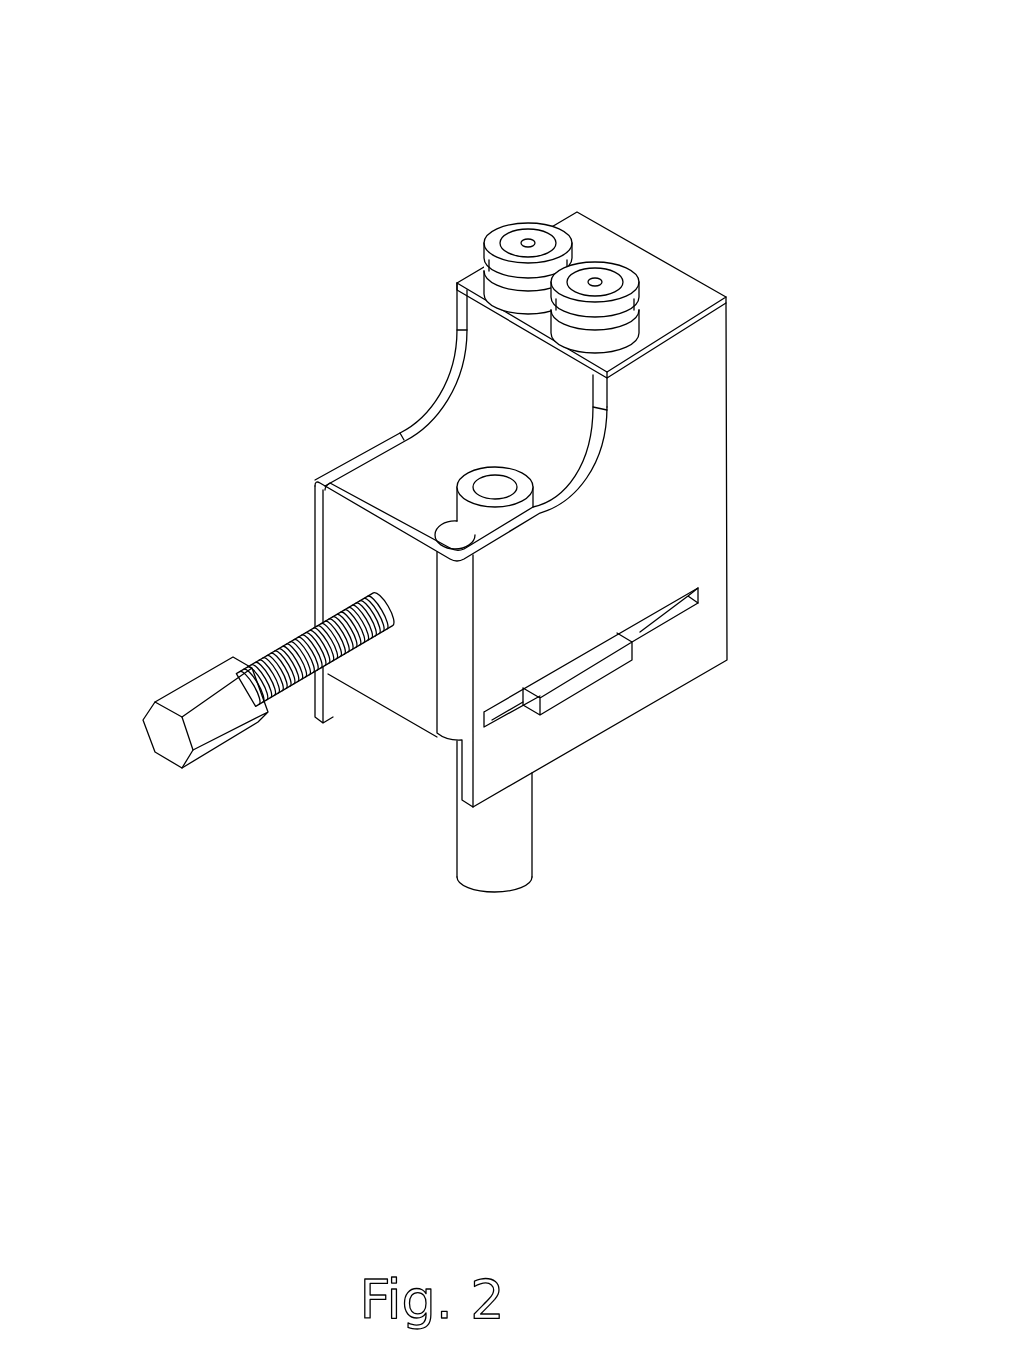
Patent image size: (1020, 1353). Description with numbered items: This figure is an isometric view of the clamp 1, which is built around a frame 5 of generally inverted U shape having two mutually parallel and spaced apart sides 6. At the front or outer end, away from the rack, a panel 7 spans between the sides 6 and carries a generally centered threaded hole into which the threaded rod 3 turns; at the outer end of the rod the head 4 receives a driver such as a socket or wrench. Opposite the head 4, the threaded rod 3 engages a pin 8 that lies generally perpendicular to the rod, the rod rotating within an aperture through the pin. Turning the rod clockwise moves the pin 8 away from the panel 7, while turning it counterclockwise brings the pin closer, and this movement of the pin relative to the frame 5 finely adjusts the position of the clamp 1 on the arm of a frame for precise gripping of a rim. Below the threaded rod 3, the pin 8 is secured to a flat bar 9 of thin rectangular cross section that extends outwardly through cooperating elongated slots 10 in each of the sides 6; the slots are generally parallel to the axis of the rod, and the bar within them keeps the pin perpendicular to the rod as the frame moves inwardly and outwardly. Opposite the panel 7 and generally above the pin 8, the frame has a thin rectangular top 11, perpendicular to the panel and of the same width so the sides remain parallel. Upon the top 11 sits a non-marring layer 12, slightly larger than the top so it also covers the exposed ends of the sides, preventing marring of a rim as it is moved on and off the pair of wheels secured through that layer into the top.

The clamp 1 is at (613, 77).
The threaded rod 3 is at (301, 628).
The head 4 is at (163, 690).
The frame 5 is at (732, 478).
The sides 6 is at (627, 543).
The panel 7 is at (398, 682).
The pin 8 is at (533, 843).
The flat bar 9 is at (588, 688).
The slots 10 is at (502, 712).
The top 11 is at (490, 318).
The non-marring layer 12 is at (680, 295).